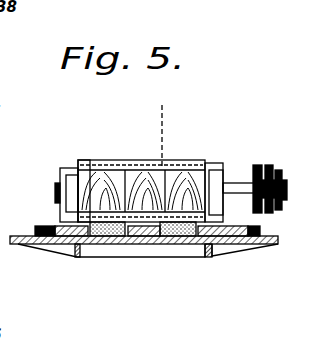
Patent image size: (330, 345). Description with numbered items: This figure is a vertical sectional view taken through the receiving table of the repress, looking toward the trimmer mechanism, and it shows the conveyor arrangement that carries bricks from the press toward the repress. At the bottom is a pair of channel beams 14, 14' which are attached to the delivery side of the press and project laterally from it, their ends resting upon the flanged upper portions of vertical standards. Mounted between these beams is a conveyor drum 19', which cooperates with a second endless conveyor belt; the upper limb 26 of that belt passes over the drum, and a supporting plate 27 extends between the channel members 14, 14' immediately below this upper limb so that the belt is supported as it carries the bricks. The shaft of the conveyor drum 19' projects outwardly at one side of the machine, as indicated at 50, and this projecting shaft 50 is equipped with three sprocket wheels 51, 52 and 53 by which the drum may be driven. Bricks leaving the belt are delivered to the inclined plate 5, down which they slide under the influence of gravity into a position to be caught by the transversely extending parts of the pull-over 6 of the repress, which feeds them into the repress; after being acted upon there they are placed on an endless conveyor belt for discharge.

The inclined plate 5 is at (100, 178).
The pull-over 6 is at (97, 243).
The channel beam 14 is at (160, 254).
The channel beam 14' is at (41, 197).
The conveyor drum 19' is at (208, 160).
The upper limb 26 is at (90, 170).
The supporting plate 27 is at (195, 163).
The shaft 50 is at (236, 183).
The sprocket wheel 51 is at (258, 165).
The sprocket wheel 52 is at (268, 165).
The sprocket wheel 53 is at (282, 208).